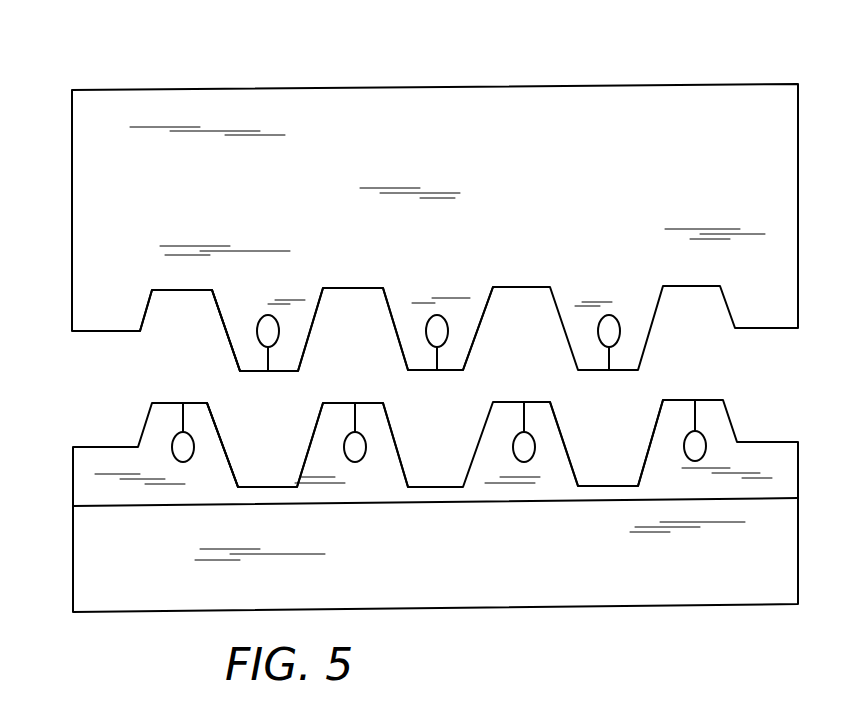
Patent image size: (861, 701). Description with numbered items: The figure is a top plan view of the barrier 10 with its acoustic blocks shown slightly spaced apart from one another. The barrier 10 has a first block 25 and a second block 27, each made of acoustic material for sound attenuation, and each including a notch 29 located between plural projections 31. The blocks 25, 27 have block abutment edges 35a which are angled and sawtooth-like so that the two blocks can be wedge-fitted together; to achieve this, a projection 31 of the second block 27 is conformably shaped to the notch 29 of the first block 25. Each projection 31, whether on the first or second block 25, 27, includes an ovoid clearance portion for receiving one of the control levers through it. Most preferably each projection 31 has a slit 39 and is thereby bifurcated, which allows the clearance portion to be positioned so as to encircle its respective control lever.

The barrier 10 is at (250, 72).
The first block 25 is at (193, 595).
The second block 27 is at (78, 240).
The notch 29 is at (177, 303).
The projections 31 is at (225, 337).
The block abutment edges 35a is at (652, 433).
The slit 39 is at (610, 358).